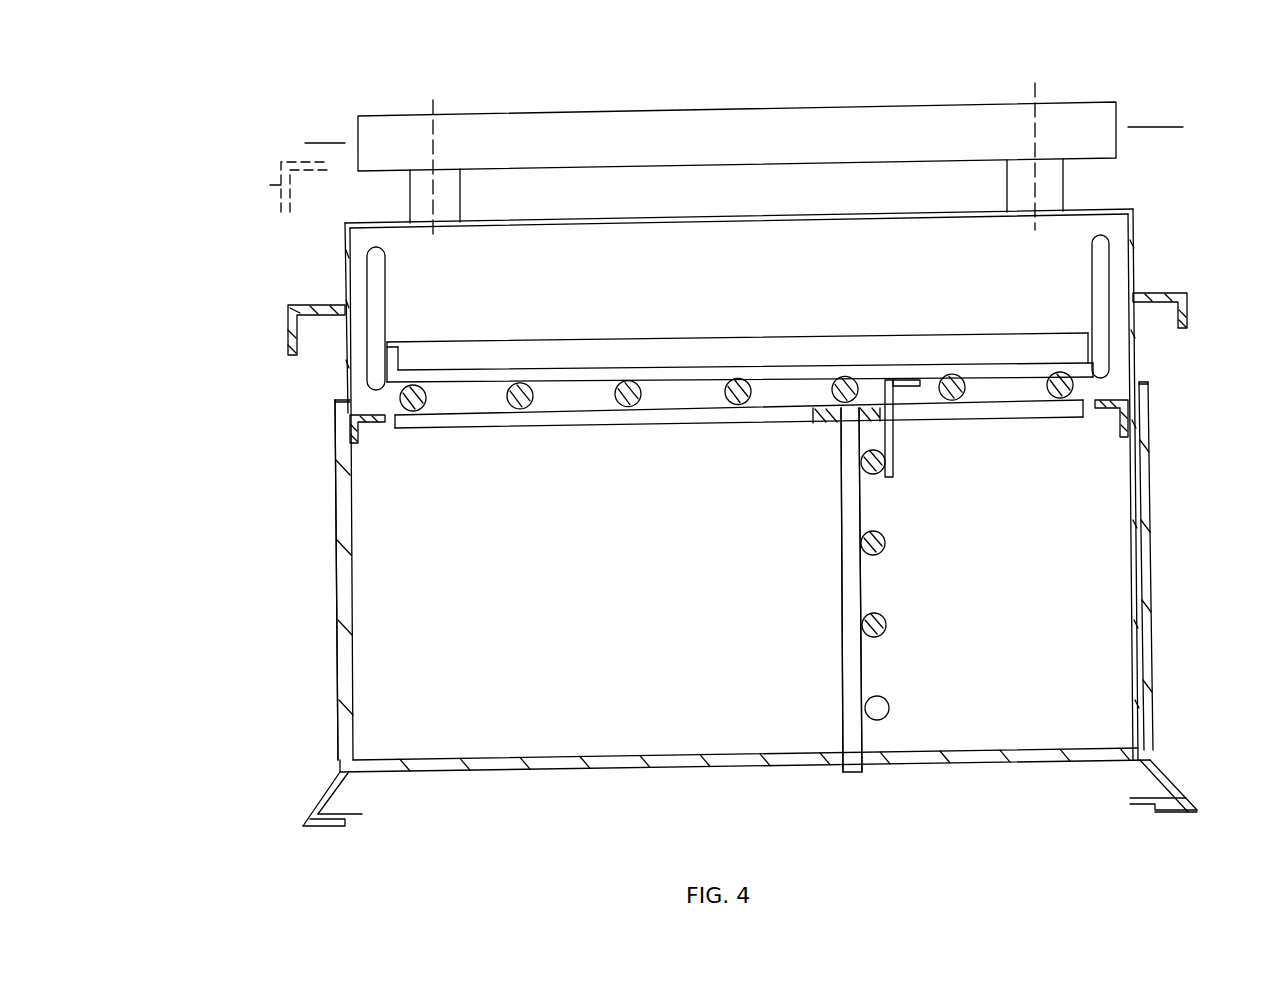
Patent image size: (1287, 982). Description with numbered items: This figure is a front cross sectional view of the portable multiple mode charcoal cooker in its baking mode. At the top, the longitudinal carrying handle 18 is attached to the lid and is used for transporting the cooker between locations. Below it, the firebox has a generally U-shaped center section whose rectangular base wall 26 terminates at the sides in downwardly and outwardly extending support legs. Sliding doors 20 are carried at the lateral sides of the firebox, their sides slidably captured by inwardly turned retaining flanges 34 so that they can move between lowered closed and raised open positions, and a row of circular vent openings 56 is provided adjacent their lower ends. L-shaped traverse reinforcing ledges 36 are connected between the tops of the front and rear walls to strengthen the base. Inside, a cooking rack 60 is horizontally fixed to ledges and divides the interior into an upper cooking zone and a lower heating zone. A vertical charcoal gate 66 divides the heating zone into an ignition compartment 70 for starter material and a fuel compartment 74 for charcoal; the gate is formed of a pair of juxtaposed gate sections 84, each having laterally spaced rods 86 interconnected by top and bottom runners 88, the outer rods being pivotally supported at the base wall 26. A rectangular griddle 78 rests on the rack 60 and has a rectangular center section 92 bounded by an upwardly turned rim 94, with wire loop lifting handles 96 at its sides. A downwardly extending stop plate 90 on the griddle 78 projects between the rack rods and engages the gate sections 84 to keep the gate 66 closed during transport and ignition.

The carrying handle 18 is at (553, 128).
The sliding doors 20 is at (281, 185).
The base wall 26 is at (750, 787).
The retaining flanges 34 is at (335, 453).
The traverse reinforcing ledges 36 is at (355, 428).
The vent openings 56 is at (340, 705).
The cooking rack 60 is at (532, 427).
The charcoal gate 66 is at (838, 481).
The ignition compartment 70 is at (1074, 606).
The fuel compartment 74 is at (619, 606).
The griddle 78 is at (659, 338).
The gate sections 84 is at (840, 524).
The rods 86 is at (885, 541).
The runners 88 is at (848, 603).
The stop plate 90 is at (890, 440).
The center section 92 is at (817, 373).
The rim 94 is at (1083, 346).
The lifting handles 96 is at (375, 297).